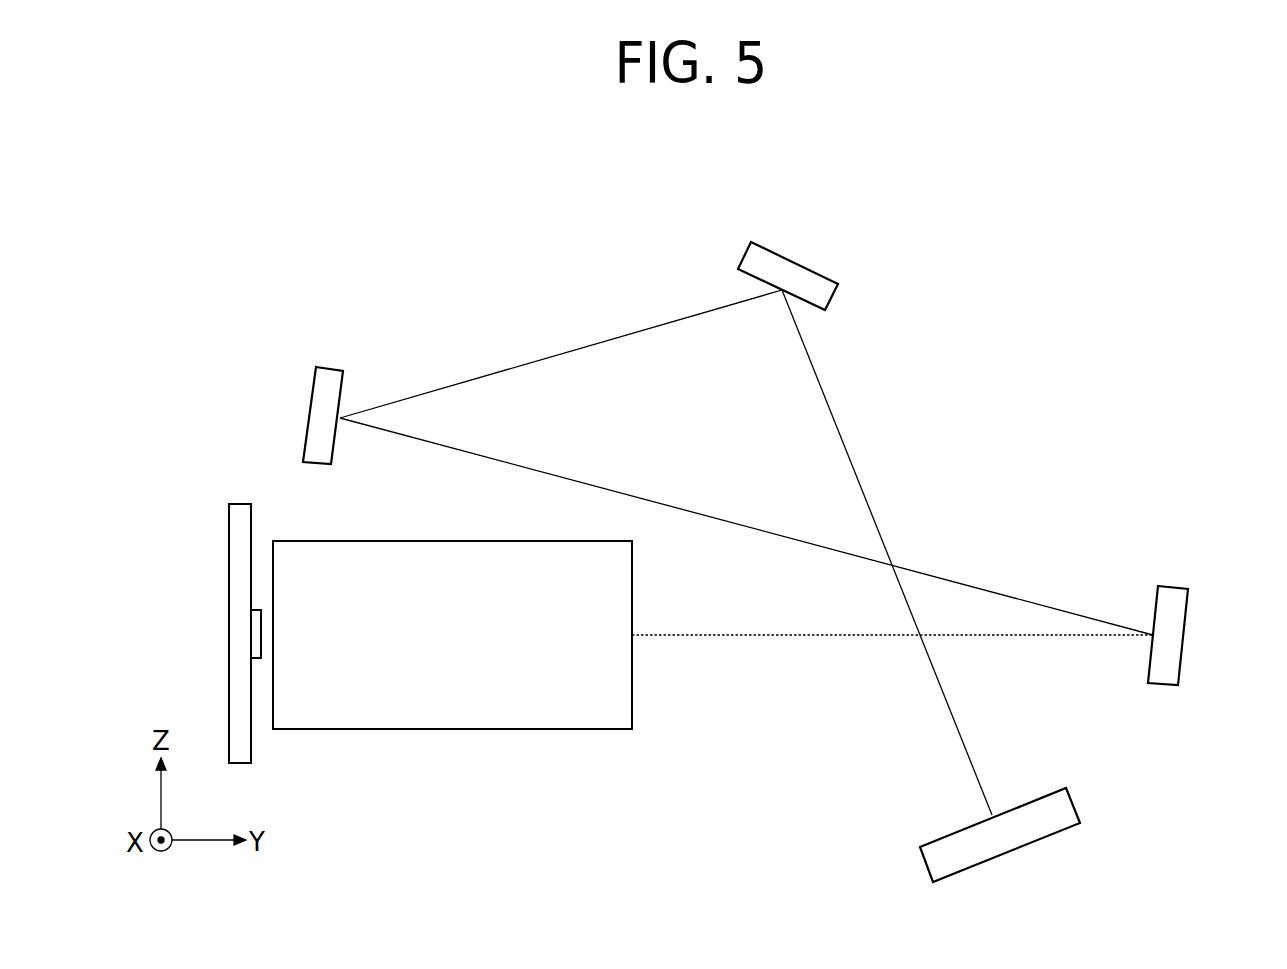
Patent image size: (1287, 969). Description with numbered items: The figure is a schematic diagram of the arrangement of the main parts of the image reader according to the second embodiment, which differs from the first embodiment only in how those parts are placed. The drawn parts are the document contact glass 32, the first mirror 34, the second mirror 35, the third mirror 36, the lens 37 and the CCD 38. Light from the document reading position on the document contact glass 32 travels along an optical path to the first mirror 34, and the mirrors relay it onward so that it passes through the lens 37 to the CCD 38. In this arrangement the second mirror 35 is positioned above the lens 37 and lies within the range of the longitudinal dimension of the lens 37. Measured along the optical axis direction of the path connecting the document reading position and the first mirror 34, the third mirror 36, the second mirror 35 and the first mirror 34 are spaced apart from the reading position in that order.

The document contact glass 32 is at (1080, 800).
The first mirror 34 is at (813, 272).
The second mirror 35 is at (316, 380).
The third mirror 36 is at (1186, 620).
The lens 37 is at (436, 712).
The CCD 38 is at (256, 632).